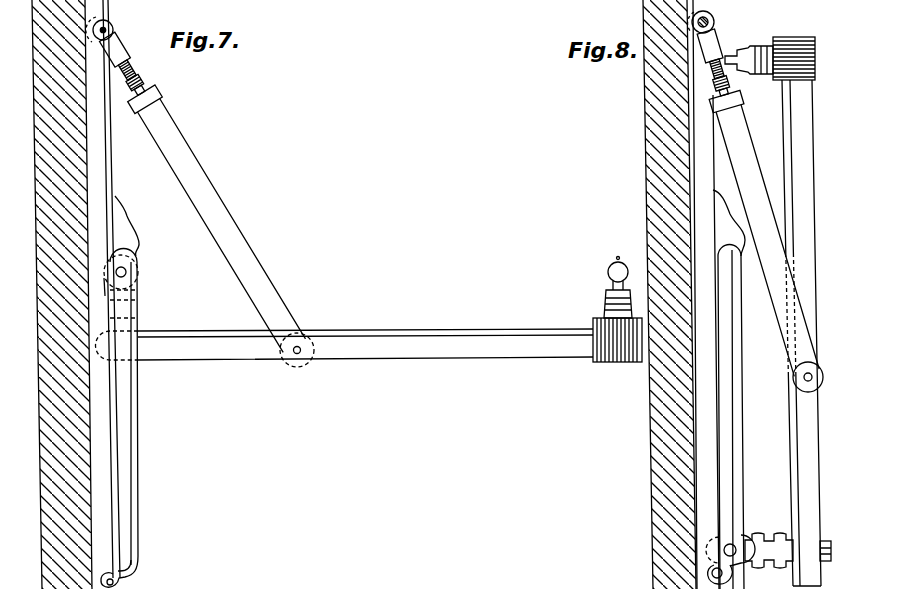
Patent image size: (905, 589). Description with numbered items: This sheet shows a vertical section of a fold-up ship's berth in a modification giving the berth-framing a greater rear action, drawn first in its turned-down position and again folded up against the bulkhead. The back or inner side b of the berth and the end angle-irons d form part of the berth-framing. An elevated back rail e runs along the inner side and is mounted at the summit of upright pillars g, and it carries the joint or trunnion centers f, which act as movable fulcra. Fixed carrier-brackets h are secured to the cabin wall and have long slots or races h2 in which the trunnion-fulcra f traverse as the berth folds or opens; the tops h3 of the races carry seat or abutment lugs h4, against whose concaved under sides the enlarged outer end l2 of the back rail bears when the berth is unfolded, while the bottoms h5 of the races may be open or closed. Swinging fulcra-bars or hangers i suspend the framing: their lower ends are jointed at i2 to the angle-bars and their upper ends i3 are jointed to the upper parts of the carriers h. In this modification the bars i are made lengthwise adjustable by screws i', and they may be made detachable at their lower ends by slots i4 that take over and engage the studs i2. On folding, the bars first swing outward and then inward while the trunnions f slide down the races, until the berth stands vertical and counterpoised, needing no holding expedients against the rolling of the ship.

In FIG. 7, the back or inner side of berth b is at (91, 294).
In FIG. 8, the back or inner side of berth b is at (669, 294).
In FIG. 7, the fixed carrier-brackets h is at (138, 438).
In FIG. 8, the fixed carrier-brackets h is at (706, 294).
In FIG. 7, the slots or races h2 is at (130, 507).
In FIG. 8, the tops of the races h3 is at (722, 280).
In FIG. 7, the seat or abutment lugs h4 is at (128, 238).
In FIG. 8, the seat or abutment lugs h4 is at (720, 230).
In FIG. 7, the bottoms of the races h5 is at (110, 287).
In FIG. 7, the enlarged outer end of back rail l2 is at (140, 260).
In FIG. 8, the enlarged outer end of back rail l2 is at (740, 534).
In FIG. 7, the trunnion centers f is at (127, 273).
In FIG. 7, the elevated back rail e is at (133, 289).
In FIG. 7, the upright pillars g is at (135, 315).
In FIG. 7, the swinging fulcra bars i is at (203, 192).
In FIG. 8, the swinging fulcra bars i is at (766, 225).
In FIG. 8, the adjusting screws i' is at (716, 37).
In FIG. 7, the lower joints or studs i2 is at (280, 350).
In FIG. 7, the upper ends of fulcra bars i3 is at (113, 31).
In FIG. 7, the slots i4 is at (134, 70).
In FIG. 7, the end angle-irons d is at (390, 343).
In FIG. 8, the end angle-irons d is at (778, 311).